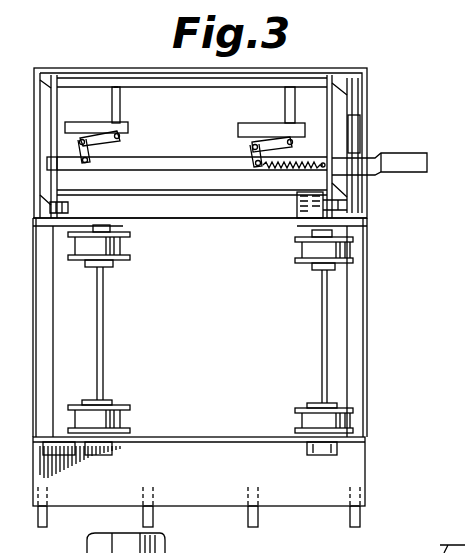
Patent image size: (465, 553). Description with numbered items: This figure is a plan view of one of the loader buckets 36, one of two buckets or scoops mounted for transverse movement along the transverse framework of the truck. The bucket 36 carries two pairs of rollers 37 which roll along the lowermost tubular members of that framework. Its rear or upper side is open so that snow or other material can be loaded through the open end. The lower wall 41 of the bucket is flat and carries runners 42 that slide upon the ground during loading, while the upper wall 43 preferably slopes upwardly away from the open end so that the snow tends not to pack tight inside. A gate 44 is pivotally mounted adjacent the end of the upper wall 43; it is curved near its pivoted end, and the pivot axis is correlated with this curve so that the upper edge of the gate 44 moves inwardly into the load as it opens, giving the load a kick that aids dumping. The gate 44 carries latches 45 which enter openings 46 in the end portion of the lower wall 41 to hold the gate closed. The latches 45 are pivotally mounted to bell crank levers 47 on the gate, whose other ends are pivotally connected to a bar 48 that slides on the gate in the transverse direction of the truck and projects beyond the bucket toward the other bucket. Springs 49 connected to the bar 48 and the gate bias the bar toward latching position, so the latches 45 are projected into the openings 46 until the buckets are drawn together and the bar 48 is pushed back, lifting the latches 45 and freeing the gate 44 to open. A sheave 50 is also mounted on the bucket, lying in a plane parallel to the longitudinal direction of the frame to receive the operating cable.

The bucket 36 is at (224, 327).
The rollers 37 is at (120, 250).
The lower wall 41 is at (310, 487).
The runners 42 is at (143, 515).
The upper wall 43 is at (300, 342).
The gate 44 is at (214, 124).
The latches 45 is at (121, 108).
The openings 46 is at (120, 87).
The bell crank levers 47 is at (116, 142).
The bar 48 is at (407, 155).
The springs 49 is at (287, 167).
The sheave 50 is at (343, 203).